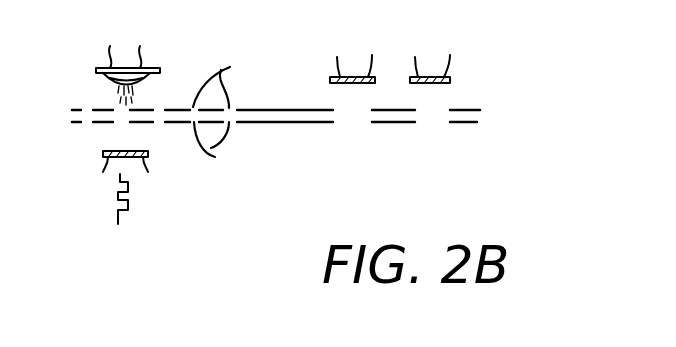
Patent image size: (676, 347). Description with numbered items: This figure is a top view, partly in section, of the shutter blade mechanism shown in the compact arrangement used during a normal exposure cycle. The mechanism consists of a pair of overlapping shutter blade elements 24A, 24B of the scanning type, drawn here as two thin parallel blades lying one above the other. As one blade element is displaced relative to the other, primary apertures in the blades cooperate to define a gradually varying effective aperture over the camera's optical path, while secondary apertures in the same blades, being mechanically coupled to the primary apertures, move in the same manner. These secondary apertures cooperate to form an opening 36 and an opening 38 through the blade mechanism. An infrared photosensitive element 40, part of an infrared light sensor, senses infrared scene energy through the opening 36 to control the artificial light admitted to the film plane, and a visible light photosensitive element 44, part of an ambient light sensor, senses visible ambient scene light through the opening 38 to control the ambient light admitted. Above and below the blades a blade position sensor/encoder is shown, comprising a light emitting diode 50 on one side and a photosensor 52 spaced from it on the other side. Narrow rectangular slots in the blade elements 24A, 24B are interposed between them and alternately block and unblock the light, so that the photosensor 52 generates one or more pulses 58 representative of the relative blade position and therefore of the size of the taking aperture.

The shutter blade element 24A is at (470, 123).
The shutter blade element 24B is at (462, 108).
The opening 36 is at (357, 120).
The opening 38 is at (432, 122).
The infrared photosensitive element 40 is at (330, 81).
The visible light photosensitive element 44 is at (455, 81).
The light emitting diode 50 is at (160, 70).
The photosensor 52 is at (100, 152).
The pulses 58 is at (158, 207).